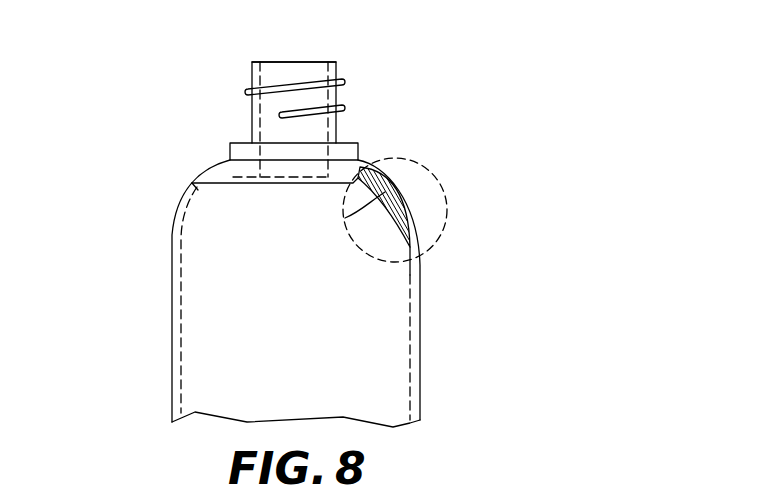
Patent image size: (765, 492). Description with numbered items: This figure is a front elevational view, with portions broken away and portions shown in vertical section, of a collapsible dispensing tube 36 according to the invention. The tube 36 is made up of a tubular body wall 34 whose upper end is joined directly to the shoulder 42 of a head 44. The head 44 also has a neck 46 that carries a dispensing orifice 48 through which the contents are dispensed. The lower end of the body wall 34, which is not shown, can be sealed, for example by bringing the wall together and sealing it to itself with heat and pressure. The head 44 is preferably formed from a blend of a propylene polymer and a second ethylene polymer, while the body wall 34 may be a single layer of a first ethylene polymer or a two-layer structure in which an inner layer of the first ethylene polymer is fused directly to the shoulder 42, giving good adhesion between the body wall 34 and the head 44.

The tubular body wall 34 is at (413, 322).
The collapsible dispensing tube 36 is at (128, 165).
The shoulder 42 is at (358, 166).
The head 44 is at (206, 141).
The neck 46 is at (340, 98).
The dispensing orifice 48 is at (296, 72).